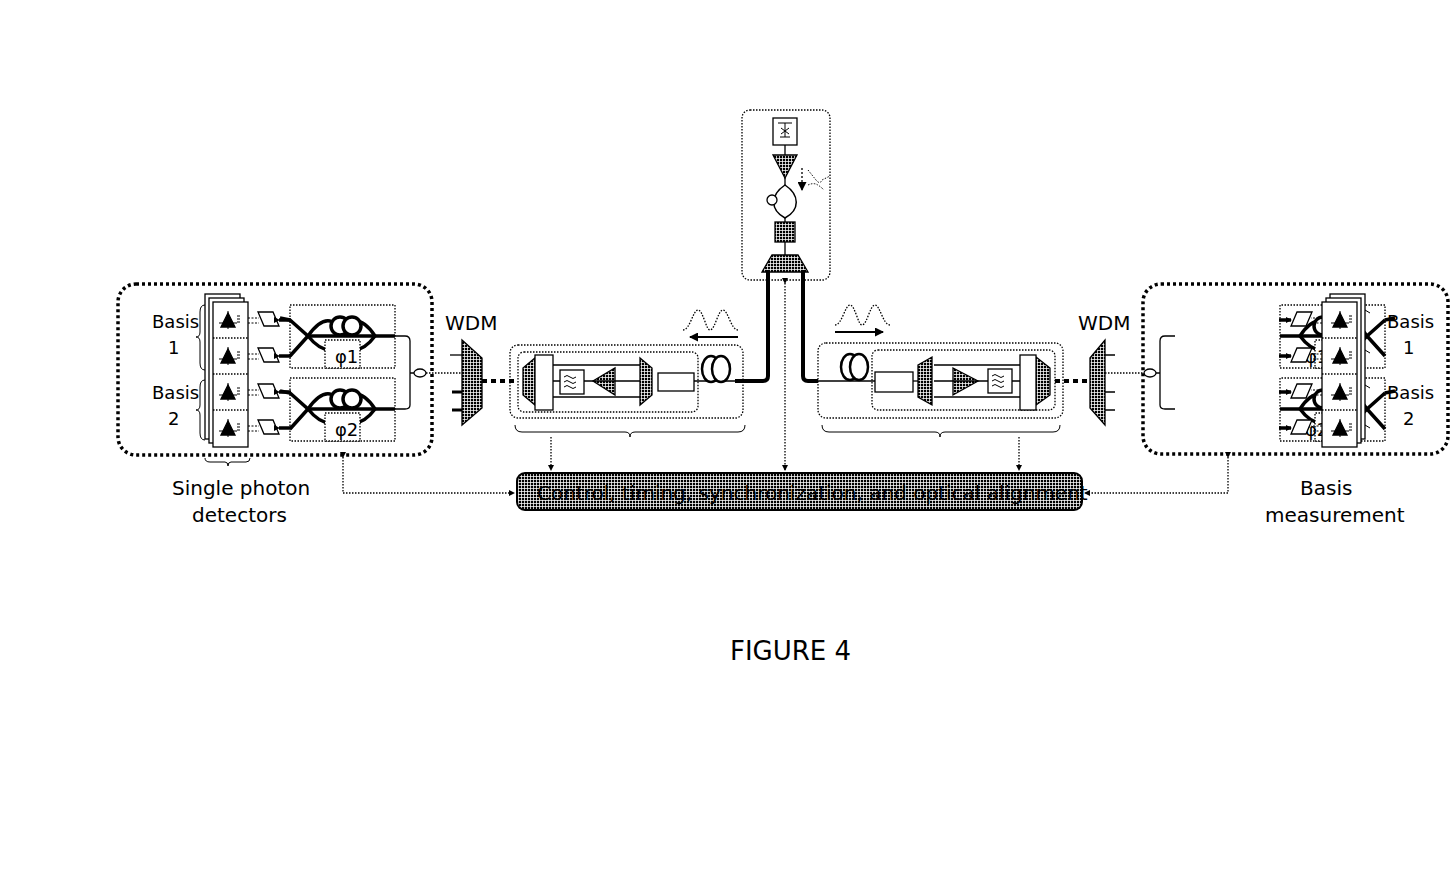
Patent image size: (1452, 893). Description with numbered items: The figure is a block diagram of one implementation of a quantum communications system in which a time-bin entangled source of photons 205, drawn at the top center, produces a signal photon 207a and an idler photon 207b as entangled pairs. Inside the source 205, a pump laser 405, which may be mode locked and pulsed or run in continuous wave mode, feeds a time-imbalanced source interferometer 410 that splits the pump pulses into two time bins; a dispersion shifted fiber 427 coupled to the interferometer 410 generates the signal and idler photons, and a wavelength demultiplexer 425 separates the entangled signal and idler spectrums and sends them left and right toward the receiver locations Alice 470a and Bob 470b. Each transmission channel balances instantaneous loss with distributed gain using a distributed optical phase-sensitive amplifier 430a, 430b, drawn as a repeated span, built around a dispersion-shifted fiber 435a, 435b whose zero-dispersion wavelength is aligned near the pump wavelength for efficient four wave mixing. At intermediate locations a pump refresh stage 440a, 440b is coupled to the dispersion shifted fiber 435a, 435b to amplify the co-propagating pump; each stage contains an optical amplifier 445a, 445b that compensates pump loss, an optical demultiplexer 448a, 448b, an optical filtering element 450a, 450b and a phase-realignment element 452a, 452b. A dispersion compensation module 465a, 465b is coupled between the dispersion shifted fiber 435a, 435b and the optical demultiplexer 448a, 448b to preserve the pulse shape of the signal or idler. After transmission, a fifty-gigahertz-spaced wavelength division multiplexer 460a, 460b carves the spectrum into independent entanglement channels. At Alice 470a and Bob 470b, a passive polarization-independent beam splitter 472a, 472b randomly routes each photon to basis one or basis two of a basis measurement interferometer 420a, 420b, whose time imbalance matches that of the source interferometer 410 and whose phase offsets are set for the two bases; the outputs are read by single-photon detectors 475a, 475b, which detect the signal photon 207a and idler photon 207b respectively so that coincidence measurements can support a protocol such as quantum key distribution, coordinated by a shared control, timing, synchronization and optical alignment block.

The time-bin entangled source of photons 205 is at (723, 118).
The signal photon 207a is at (658, 287).
The idler photon 207b is at (883, 268).
The pump laser 405 is at (803, 135).
The time-imbalanced source interferometer 410 is at (770, 190).
The wavelength demultiplexer 425 is at (820, 268).
The dispersion shifted fiber 427 is at (850, 153).
The basis measurement interferometer 420a is at (328, 462).
The basis measurement interferometer 420b is at (1257, 440).
The distributed optical phase-sensitive amplifier 430a is at (547, 443).
The distributed optical phase-sensitive amplifier 430b is at (1092, 438).
The dispersion-shifted fiber 435a is at (742, 403).
The dispersion-shifted fiber 435b is at (822, 395).
The pump refresh stage 440a is at (593, 343).
The pump refresh stage 440b is at (975, 338).
The optical amplifier 445a is at (608, 367).
The optical amplifier 445b is at (978, 367).
The optical demultiplexer 448a is at (648, 362).
The optical demultiplexer 448b is at (927, 362).
The optical filtering element 450a is at (563, 367).
The optical filtering element 450b is at (1010, 393).
The phase-realignment element 452a is at (548, 360).
The phase-realignment element 452b is at (1027, 357).
The wavelength division multiplexer 460a is at (462, 428).
The wavelength division multiplexer 460b is at (1117, 440).
The dispersion compensation module 465a is at (667, 390).
The dispersion compensation module 465b is at (902, 365).
The Alice 470a is at (272, 265).
The Bob 470b is at (1314, 265).
The passive polarization-independent beam splitter 472a is at (423, 360).
The passive polarization-independent beam splitter 472b is at (1150, 350).
The single-photon detectors 475a is at (221, 422).
The single-photon detectors 475b is at (1358, 440).